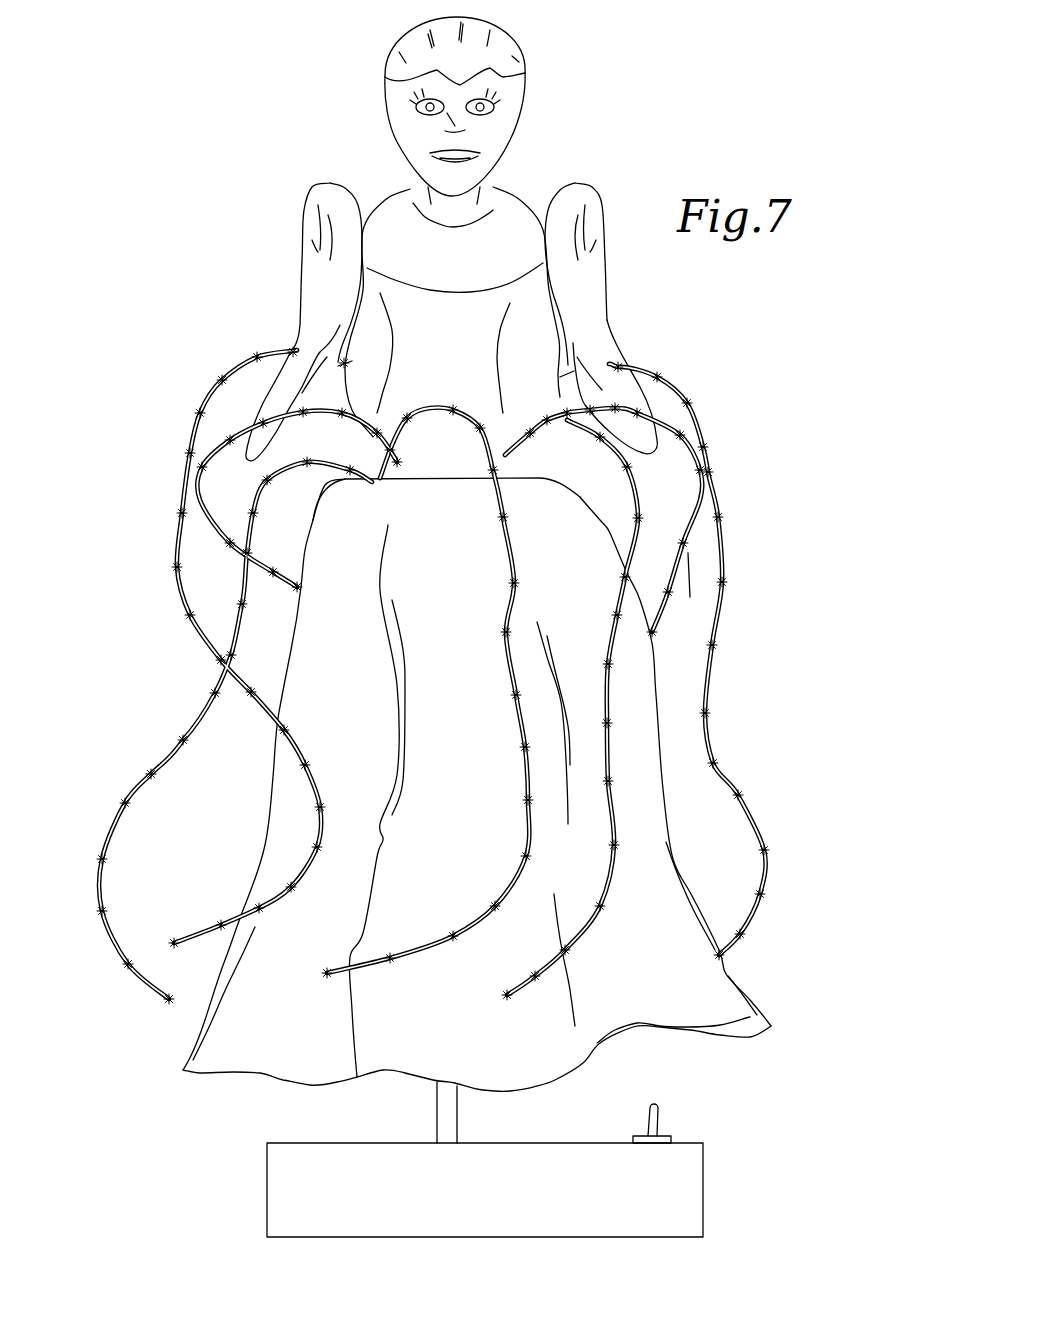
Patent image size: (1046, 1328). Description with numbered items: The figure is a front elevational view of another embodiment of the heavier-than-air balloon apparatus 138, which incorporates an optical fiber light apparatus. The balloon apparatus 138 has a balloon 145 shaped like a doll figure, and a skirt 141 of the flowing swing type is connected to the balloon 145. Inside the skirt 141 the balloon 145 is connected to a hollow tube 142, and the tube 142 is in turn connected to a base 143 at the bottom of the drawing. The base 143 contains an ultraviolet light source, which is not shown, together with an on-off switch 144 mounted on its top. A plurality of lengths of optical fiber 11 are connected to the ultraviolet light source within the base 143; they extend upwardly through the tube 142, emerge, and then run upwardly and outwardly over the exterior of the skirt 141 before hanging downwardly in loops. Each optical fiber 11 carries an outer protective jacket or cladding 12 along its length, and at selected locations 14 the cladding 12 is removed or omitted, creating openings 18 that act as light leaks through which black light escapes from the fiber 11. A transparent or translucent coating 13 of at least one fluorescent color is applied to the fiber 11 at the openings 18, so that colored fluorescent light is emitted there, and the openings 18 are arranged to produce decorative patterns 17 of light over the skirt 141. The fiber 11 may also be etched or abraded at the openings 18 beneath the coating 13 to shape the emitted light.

The optical fiber 11 is at (205, 398).
The outer jacket or cladding 12 is at (200, 710).
The fluorescent coating 13 is at (220, 379).
The selected locations 14 is at (222, 377).
The light patterns 17 is at (464, 385).
The openings 18 is at (226, 381).
The balloon apparatus 138 is at (735, 117).
The skirt 141 is at (652, 704).
The hollow tube 142 is at (457, 1120).
The base 143 is at (502, 1204).
The on-off switch 144 is at (655, 1125).
The balloon 145 is at (505, 217).